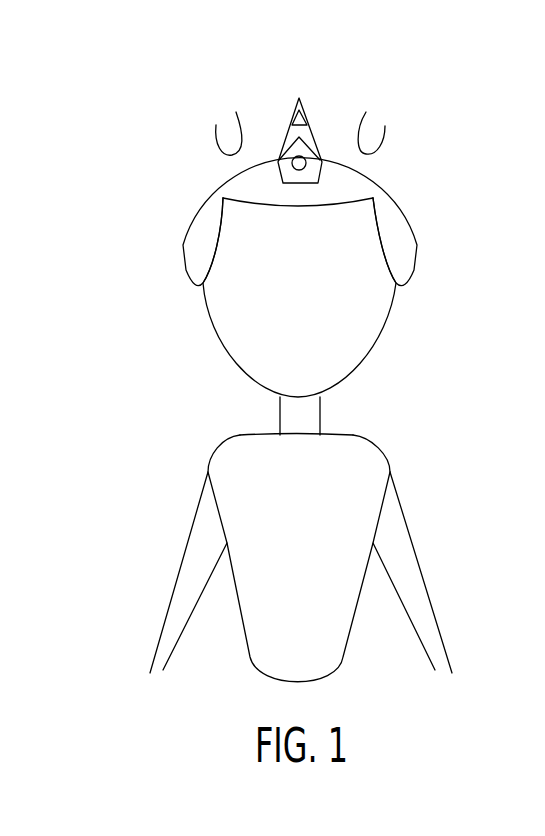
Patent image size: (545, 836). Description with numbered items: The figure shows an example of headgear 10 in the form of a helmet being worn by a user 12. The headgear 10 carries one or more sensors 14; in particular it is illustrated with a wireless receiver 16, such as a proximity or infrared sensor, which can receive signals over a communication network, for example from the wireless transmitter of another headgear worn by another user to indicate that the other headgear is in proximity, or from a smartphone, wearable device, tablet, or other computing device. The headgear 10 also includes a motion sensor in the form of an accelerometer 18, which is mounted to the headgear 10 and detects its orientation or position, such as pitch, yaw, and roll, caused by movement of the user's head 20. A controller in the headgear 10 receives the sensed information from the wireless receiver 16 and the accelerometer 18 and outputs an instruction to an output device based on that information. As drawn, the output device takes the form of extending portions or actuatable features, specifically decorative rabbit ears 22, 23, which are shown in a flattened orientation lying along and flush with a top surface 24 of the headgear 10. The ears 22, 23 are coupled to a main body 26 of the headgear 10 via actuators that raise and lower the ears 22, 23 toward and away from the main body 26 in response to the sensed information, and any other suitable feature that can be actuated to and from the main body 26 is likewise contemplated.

The headgear 10 is at (305, 78).
The user 12 is at (380, 451).
The sensors 14 is at (397, 129).
The wireless receiver 16 is at (306, 167).
The accelerometer 18 is at (307, 122).
The user's head 20 is at (391, 323).
The decorative rabbit ear 22 is at (228, 133).
The decorative rabbit ear 23 is at (372, 133).
The top surface 24 is at (263, 115).
The main body 26 is at (213, 178).